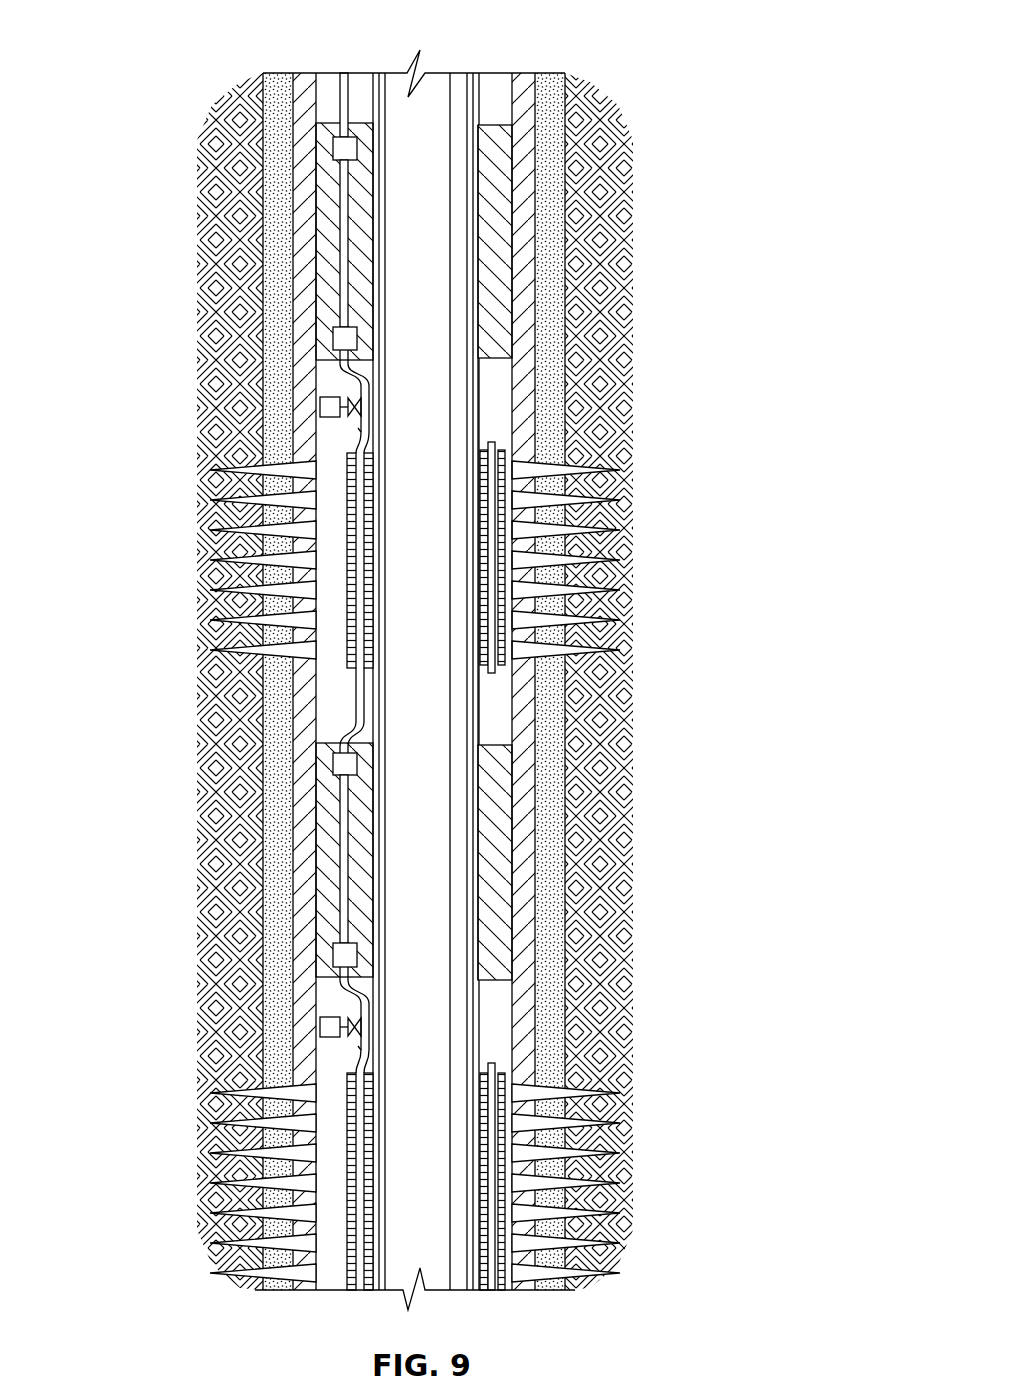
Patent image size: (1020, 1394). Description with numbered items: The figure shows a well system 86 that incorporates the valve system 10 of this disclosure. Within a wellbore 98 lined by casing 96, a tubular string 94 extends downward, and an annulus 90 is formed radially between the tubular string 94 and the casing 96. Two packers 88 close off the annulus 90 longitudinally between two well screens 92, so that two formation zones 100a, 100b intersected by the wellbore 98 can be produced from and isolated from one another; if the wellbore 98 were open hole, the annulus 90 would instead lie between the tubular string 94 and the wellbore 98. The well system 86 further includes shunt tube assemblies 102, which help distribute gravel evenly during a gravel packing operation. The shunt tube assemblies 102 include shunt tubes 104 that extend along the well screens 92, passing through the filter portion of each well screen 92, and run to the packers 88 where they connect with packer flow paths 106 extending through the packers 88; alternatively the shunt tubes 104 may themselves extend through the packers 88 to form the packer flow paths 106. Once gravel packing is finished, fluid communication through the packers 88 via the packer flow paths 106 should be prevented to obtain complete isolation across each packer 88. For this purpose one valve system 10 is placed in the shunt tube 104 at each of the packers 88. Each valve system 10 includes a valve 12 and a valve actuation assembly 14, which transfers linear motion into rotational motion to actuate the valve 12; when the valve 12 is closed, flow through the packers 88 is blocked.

The well system 86 is at (707, 36).
The packers 88 is at (516, 188).
The annulus 90 is at (498, 700).
The well screens 92 is at (353, 492).
The tubular string 94 is at (488, 406).
The casing 96 is at (266, 447).
The wellbore 98 is at (262, 866).
The formation zone 100a is at (616, 546).
The formation zone 100b is at (616, 1232).
The shunt tube assemblies 102 is at (330, 366).
The shunt tubes 104 is at (353, 598).
The packer flow paths 106 is at (339, 266).
The valve system 10 is at (351, 436).
The valve 12 is at (364, 400).
The valve actuation assembly 14 is at (318, 406).